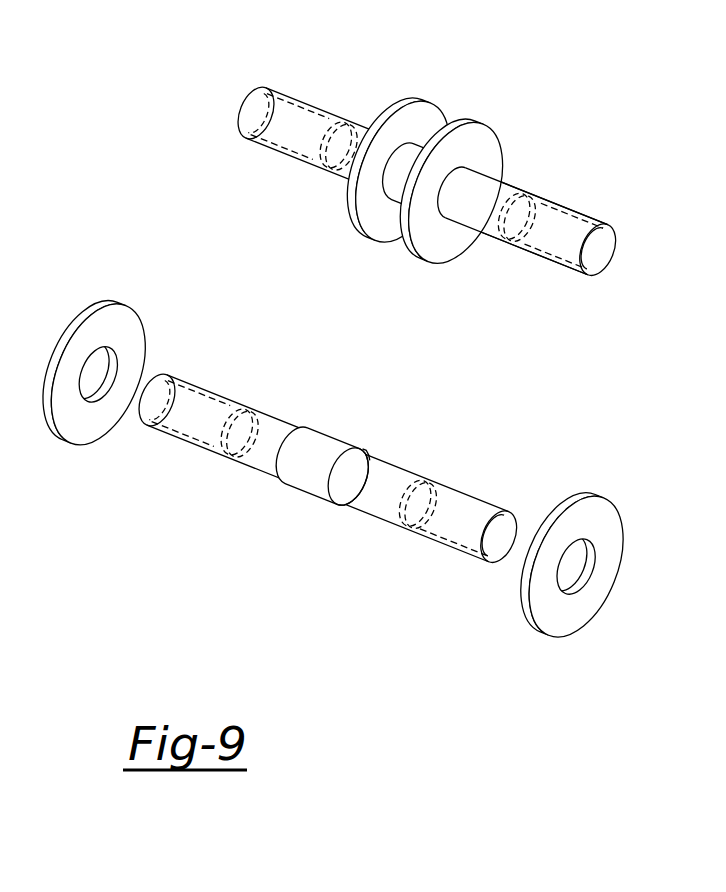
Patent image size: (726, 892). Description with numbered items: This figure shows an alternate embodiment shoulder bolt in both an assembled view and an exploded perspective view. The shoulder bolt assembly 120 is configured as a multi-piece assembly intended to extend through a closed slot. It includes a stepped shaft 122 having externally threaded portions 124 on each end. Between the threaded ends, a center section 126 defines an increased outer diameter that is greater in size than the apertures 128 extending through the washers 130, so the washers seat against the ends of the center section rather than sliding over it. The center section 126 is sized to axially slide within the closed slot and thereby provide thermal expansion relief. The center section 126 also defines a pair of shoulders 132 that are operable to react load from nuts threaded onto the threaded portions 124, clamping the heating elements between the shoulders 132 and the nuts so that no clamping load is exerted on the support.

The shoulder bolt assembly 120 is at (586, 83).
The stepped shaft 122 is at (358, 502).
The externally threaded portions 124 is at (183, 435).
The center section 126 is at (307, 481).
The apertures 128 is at (114, 370).
The washers 130 is at (120, 325).
The shoulders 132 is at (290, 445).